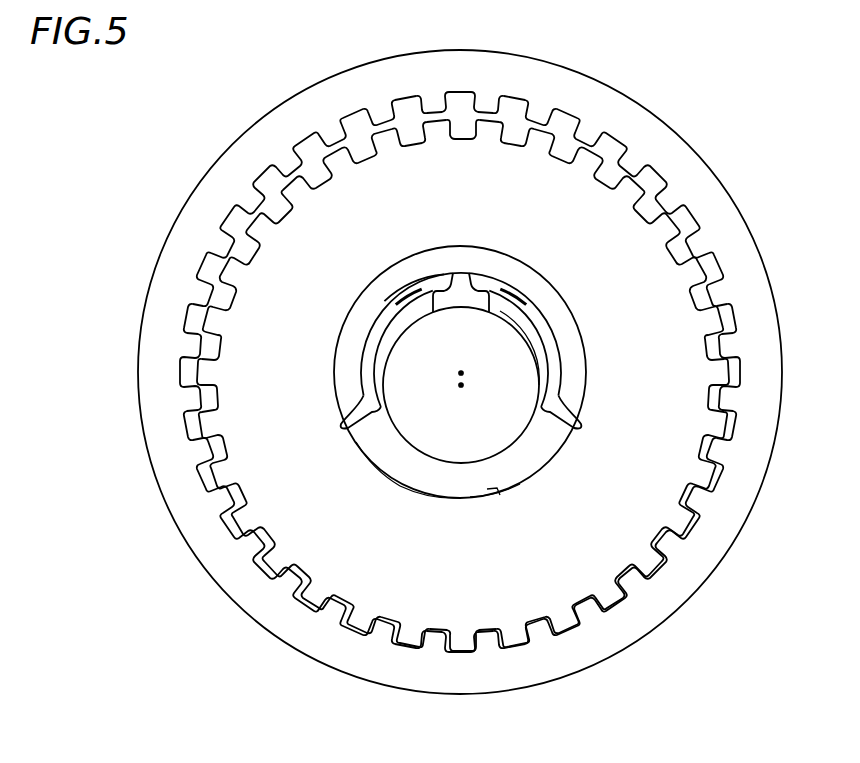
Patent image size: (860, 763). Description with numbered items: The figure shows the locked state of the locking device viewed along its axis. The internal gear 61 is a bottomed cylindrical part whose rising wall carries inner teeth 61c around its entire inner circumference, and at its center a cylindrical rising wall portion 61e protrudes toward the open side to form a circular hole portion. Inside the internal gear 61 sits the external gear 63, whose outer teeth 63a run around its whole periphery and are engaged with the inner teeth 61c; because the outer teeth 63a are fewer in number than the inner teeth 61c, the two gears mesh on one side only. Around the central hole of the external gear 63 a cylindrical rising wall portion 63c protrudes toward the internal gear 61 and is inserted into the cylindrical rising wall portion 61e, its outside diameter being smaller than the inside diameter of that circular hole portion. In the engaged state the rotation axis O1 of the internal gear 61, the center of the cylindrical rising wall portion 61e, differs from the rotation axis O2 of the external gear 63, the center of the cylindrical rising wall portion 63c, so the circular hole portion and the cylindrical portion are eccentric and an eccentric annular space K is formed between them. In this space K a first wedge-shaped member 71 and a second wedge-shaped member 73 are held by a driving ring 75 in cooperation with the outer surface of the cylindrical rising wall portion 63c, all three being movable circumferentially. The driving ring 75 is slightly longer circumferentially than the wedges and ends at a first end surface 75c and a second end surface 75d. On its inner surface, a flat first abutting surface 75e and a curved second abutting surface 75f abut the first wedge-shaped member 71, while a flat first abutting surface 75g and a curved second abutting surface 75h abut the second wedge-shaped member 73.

The internal gear 61 is at (662, 150).
The inner teeth 61c is at (702, 497).
The cylindrical rising wall portion 61e is at (500, 495).
The external gear 63 is at (603, 537).
The outer teeth 63a is at (680, 518).
The cylindrical rising wall portion 63c is at (433, 460).
The first wedge-shaped member 71 is at (413, 310).
The second wedge-shaped member 73 is at (527, 315).
The driving ring 75 is at (486, 265).
The first end surface 75c is at (352, 425).
The second end surface 75d is at (570, 426).
The first abutting surface 75e is at (427, 280).
The second abutting surface 75f is at (370, 327).
The first abutting surface 75g is at (507, 283).
The second abutting surface 75h is at (558, 345).
The rotation axis of the internal gear O1 is at (458, 372).
The rotation axis of the external gear O2 is at (461, 387).
The eccentric annular space K is at (392, 460).